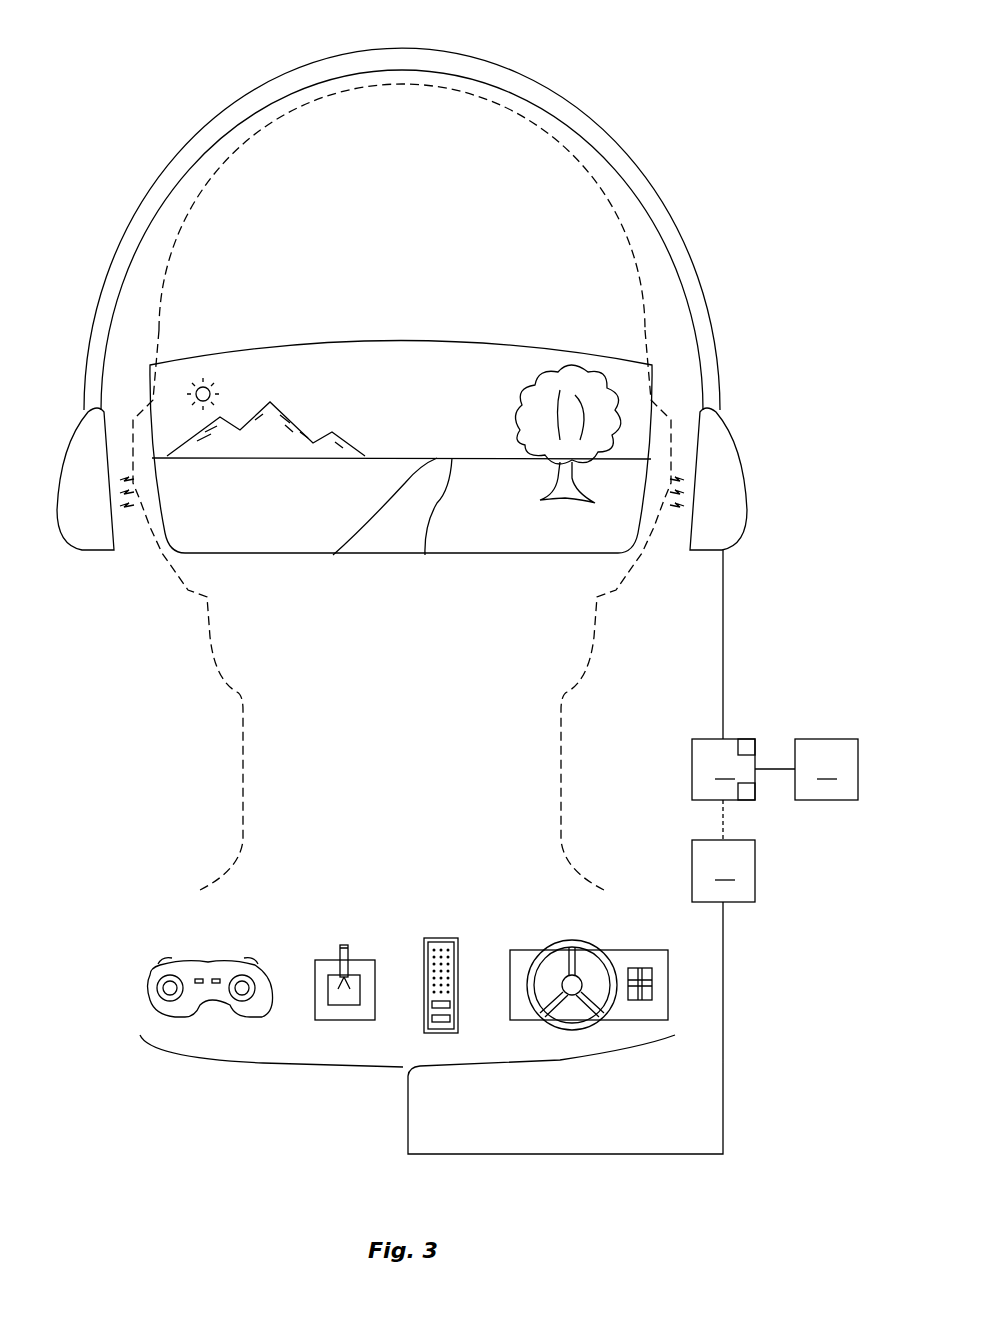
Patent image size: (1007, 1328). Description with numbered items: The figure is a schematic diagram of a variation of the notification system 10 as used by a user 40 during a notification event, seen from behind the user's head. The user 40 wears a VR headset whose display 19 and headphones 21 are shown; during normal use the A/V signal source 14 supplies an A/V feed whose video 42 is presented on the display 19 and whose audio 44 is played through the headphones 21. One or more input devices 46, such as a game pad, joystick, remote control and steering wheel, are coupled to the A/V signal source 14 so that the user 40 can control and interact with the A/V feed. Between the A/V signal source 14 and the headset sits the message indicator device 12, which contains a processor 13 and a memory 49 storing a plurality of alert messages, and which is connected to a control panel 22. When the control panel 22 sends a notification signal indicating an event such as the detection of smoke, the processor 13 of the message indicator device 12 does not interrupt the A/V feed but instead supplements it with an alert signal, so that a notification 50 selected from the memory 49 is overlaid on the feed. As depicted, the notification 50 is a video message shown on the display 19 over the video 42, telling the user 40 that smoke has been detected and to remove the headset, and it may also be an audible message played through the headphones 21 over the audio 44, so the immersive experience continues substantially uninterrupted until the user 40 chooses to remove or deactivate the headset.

The notification system 10 is at (718, 98).
The headphones 21 is at (315, 58).
The audio 44 is at (133, 510).
The user 40 is at (425, 772).
The display 19 is at (313, 343).
The video 42 is at (498, 535).
The notification 50 is at (420, 351).
The message indicator device 12 is at (723, 769).
The memory 49 is at (750, 741).
The processor 13 is at (752, 797).
The control panel 22 is at (806, 769).
The A/V signal source 14 is at (723, 871).
The input devices 46 is at (260, 1064).